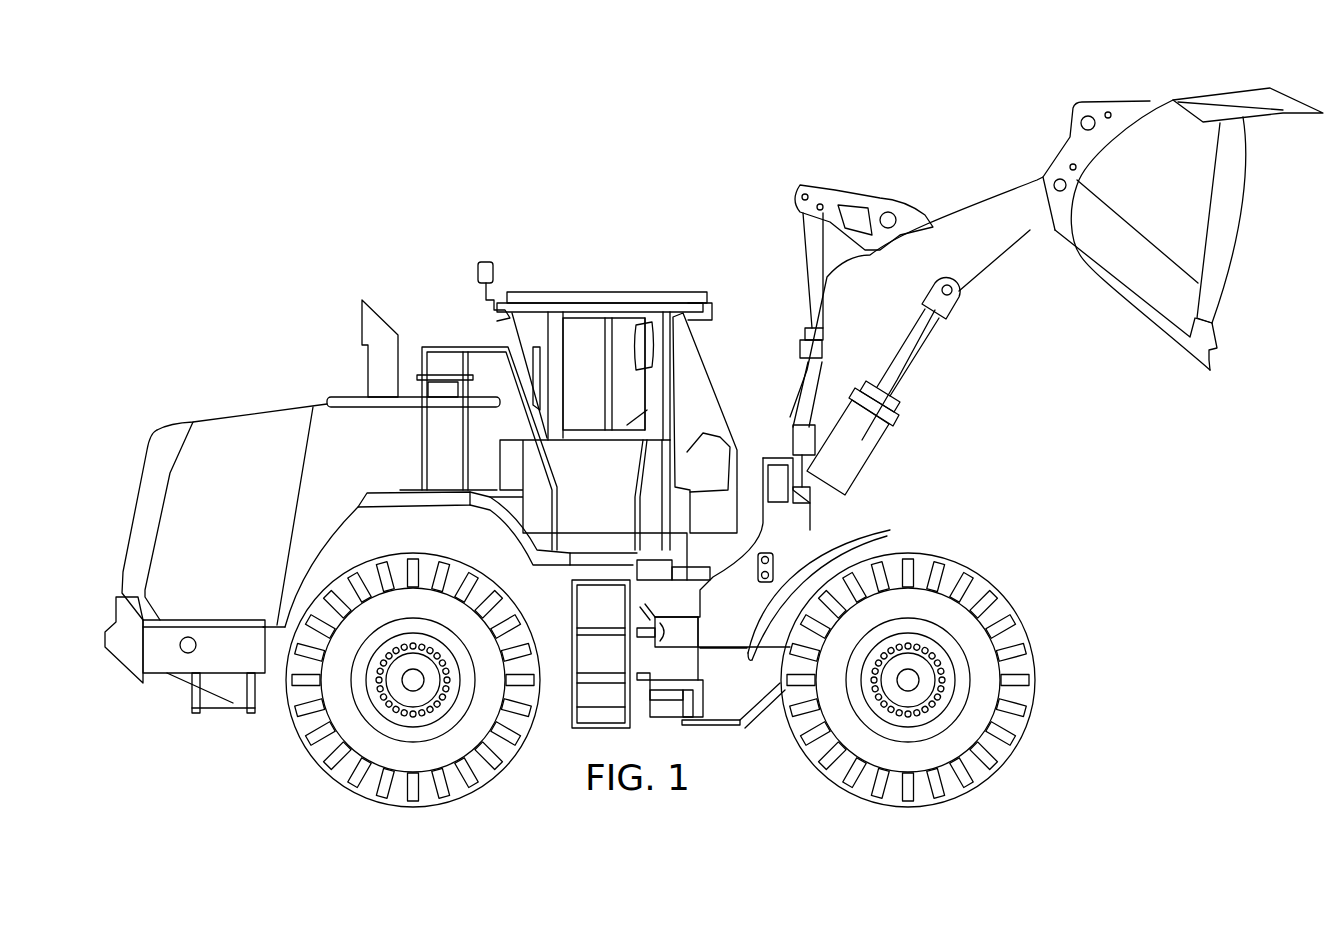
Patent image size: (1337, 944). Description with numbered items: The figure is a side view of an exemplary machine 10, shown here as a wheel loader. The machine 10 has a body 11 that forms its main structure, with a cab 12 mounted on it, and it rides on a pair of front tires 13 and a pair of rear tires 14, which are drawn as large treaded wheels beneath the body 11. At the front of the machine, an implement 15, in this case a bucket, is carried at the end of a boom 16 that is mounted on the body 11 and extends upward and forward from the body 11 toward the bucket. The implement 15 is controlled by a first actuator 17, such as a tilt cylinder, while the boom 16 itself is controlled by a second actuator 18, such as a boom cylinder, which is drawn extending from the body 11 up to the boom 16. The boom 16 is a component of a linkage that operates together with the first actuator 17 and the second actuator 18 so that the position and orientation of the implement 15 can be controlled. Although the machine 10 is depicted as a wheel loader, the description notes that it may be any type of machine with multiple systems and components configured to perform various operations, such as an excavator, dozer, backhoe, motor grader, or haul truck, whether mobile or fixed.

The machine 10 is at (378, 215).
The body 11 is at (807, 533).
The cab 12 is at (630, 298).
The front tires 13 is at (960, 795).
The rear tires 14 is at (343, 770).
The implement 15 is at (1227, 218).
The boom 16 is at (972, 258).
The first actuator 17 is at (797, 347).
The second actuator 18 is at (852, 438).